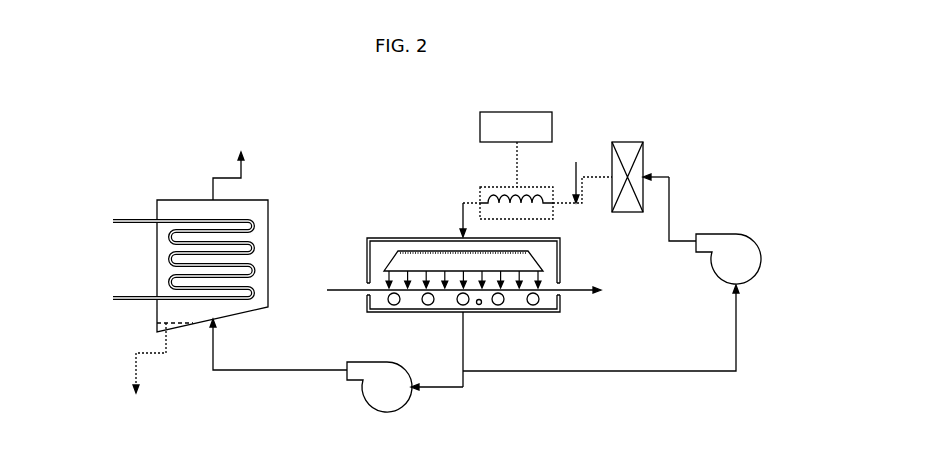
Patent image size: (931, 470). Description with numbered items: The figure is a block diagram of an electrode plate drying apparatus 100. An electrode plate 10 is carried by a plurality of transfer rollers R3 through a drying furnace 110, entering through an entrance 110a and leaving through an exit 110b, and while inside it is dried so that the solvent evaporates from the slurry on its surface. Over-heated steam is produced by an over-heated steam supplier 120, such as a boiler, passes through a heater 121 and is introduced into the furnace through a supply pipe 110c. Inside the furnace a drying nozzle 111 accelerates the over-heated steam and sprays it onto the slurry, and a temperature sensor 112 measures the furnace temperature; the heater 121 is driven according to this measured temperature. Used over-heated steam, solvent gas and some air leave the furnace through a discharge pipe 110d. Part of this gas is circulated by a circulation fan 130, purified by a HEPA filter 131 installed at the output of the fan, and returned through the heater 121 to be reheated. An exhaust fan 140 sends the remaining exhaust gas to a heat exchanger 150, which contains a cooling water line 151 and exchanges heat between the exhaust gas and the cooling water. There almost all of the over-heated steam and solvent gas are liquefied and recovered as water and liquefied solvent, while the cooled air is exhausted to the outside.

The electrode plate drying apparatus 100 is at (128, 122).
The electrode plate 10 is at (579, 293).
The drying furnace 110 is at (391, 237).
The entrance 110a is at (366, 288).
The exit 110b is at (560, 288).
The supply pipe 110c is at (462, 222).
The discharge pipe 110d is at (461, 336).
The drying nozzle 111 is at (527, 262).
The temperature sensor 112 is at (480, 307).
The transfer roller R3 is at (392, 306).
The over-heated steam supplier 120 is at (517, 111).
The heater 121 is at (495, 187).
The circulation fan 130 is at (735, 228).
The HEPA filter 131 is at (628, 141).
The exhaust fan 140 is at (387, 413).
The heat exchanger 150 is at (178, 199).
The cooling water line 151 is at (135, 219).